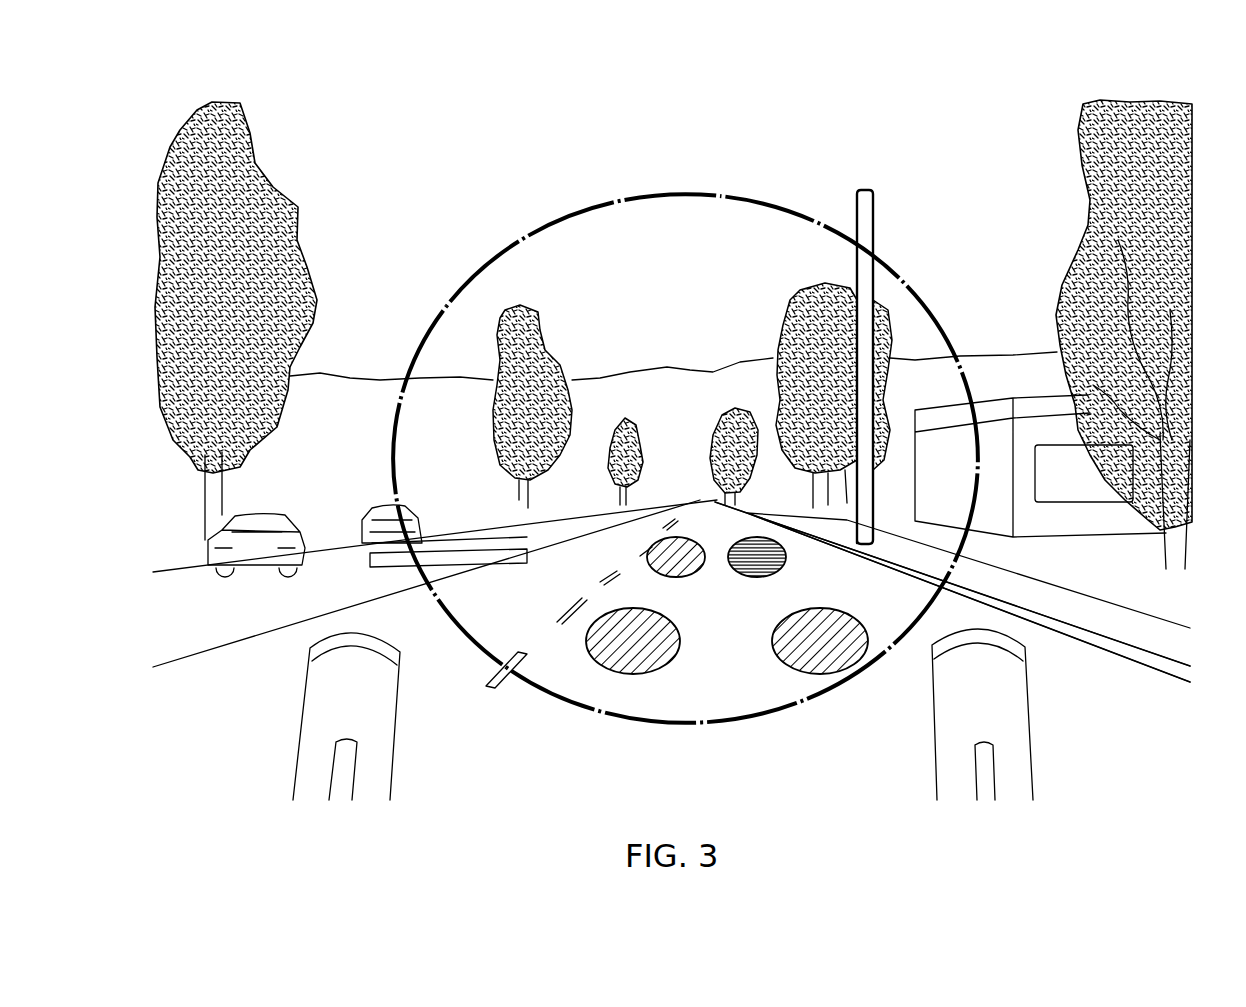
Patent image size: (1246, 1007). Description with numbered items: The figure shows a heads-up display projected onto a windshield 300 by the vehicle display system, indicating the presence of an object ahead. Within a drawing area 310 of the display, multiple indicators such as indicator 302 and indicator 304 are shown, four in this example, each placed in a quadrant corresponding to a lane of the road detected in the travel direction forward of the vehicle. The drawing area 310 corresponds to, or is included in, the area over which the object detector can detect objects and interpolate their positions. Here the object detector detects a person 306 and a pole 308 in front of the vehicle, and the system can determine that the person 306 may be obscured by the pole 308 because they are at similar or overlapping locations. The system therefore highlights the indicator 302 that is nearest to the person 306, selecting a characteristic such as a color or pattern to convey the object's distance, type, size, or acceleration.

The windshield 300 is at (1068, 89).
The indicator 302 is at (762, 538).
The indicator 304 is at (630, 609).
The person 306 is at (847, 526).
The pole 308 is at (864, 190).
The drawing area 310 is at (540, 227).